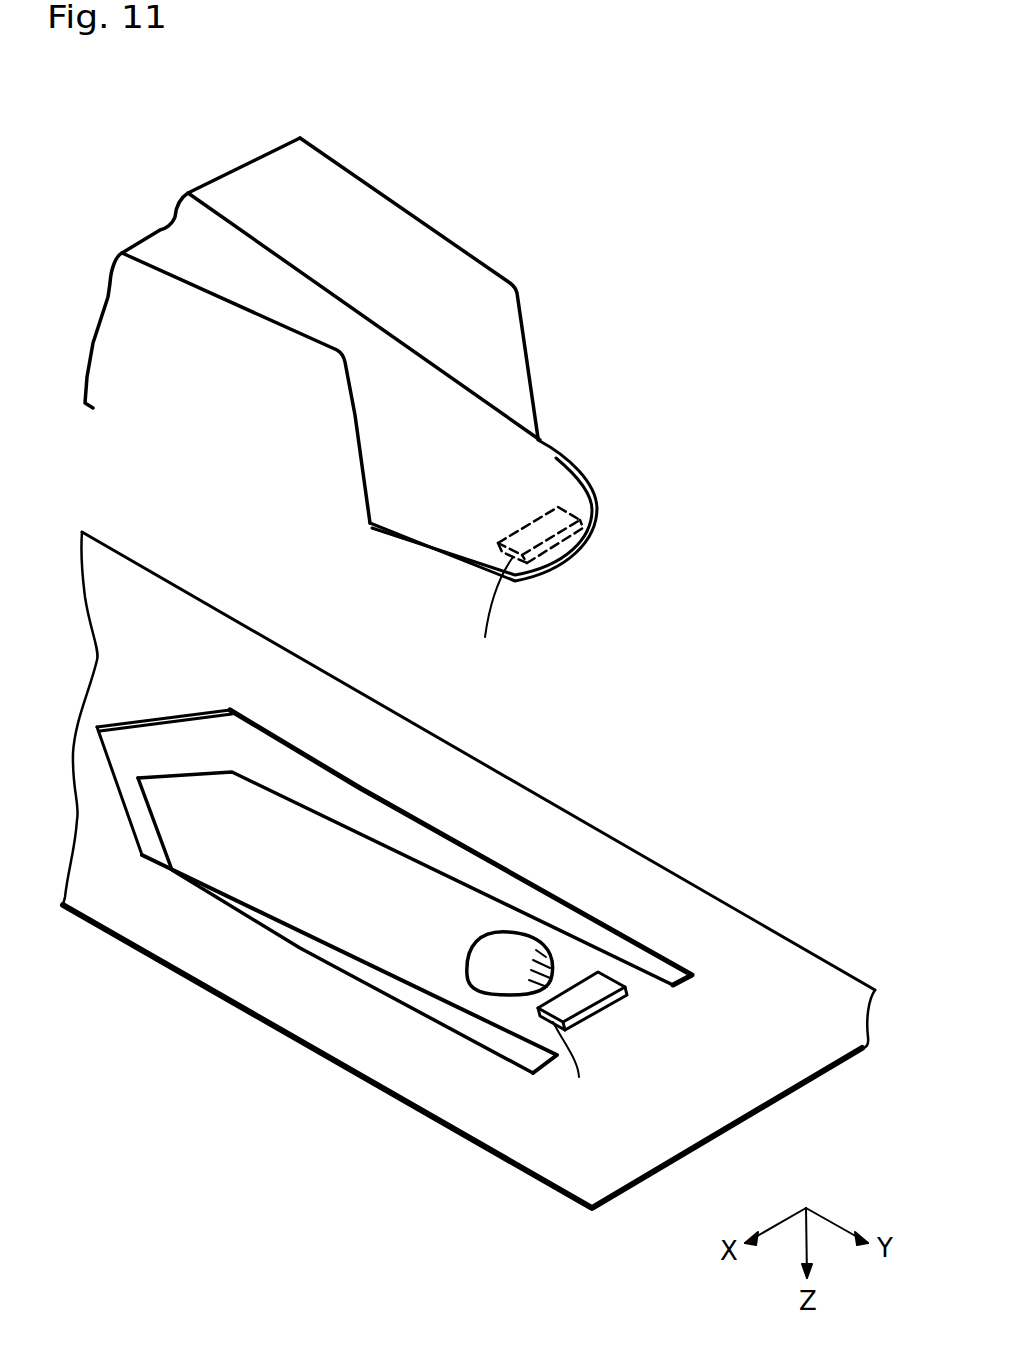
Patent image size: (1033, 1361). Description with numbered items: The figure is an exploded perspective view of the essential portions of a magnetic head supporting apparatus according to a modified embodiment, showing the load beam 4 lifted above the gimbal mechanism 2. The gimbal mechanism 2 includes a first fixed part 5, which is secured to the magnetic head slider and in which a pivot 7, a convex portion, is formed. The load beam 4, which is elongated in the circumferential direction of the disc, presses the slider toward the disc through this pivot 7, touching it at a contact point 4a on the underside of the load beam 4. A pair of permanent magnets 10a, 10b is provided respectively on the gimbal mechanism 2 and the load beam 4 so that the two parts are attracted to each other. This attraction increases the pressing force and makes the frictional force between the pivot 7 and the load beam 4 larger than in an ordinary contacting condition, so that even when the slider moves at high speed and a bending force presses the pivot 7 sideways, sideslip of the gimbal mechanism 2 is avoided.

The gimbal mechanism 2 is at (635, 858).
The load beam 4 is at (511, 360).
The contact point 4a is at (509, 496).
The first fixed part 5 is at (297, 897).
The pivot 7 is at (487, 953).
The permanent magnet 10a is at (610, 1007).
The permanent magnet 10b is at (573, 513).